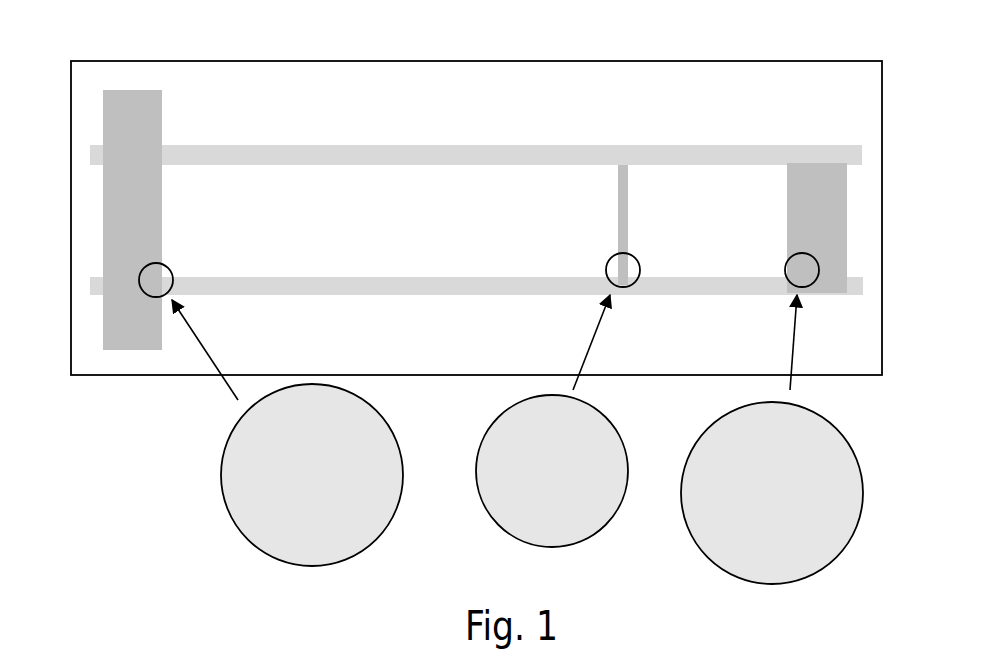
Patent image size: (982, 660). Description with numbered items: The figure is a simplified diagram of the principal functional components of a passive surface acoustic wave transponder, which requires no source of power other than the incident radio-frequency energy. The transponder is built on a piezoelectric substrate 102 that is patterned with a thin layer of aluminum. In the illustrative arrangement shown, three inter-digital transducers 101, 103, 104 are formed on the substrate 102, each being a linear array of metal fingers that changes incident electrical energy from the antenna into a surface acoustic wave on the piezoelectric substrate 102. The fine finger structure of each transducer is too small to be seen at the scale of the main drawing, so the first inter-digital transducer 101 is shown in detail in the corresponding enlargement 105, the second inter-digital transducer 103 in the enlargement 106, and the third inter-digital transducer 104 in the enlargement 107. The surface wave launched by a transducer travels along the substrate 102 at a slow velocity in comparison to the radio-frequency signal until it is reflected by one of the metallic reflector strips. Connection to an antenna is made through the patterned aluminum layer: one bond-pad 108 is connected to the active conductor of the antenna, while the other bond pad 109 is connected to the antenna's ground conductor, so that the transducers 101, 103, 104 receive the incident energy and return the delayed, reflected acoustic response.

The inter-digital transducer 101 is at (130, 209).
The piezoelectric substrate 102 is at (405, 110).
The inter-digital transducer 103 is at (620, 203).
The inter-digital transducer 104 is at (815, 222).
The enlargement of inter-digital transducer 105 is at (282, 543).
The enlargement of inter-digital transducer 106 is at (512, 513).
The enlargement of inter-digital transducer 107 is at (760, 562).
The bond-pad 108 is at (132, 103).
The bond pad 109 is at (130, 345).